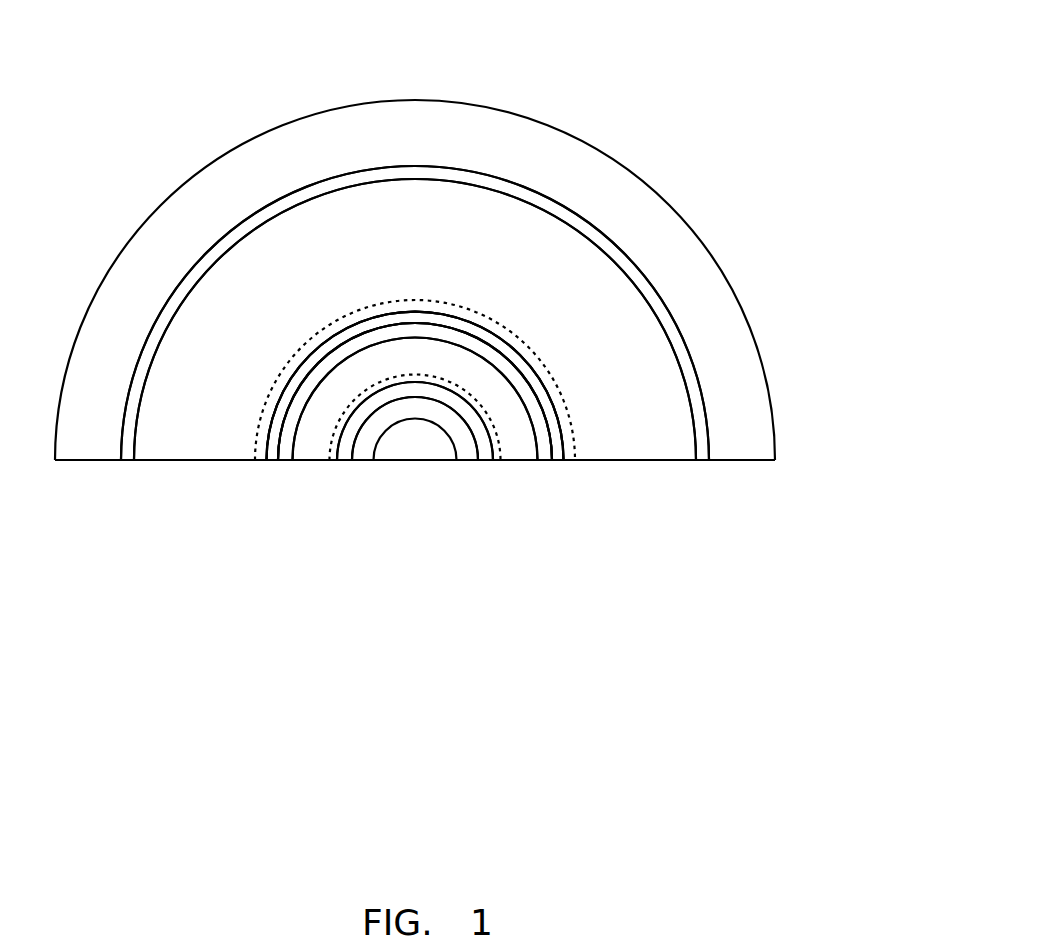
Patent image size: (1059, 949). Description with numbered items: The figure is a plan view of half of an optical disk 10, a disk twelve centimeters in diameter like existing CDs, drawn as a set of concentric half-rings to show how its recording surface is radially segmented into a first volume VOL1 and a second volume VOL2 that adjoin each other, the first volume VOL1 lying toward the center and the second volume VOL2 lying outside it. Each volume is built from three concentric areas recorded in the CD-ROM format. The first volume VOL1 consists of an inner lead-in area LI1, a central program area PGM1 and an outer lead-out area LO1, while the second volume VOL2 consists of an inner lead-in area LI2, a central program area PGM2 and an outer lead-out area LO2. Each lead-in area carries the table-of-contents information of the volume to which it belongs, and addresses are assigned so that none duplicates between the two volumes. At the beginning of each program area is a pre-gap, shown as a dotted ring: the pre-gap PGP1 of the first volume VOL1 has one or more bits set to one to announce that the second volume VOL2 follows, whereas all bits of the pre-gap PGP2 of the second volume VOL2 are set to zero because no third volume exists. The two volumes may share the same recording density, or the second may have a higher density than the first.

The optical disk 10 is at (655, 153).
The pre-gap of the first volume PGP1 is at (462, 395).
The pre-gap of the second volume PGP2 is at (548, 383).
The lead-in area of the first volume LI1 is at (482, 461).
The lead-out area of the first volume LO1 is at (547, 461).
The program area of the first volume PGM1 is at (542, 464).
The lead-in area of the second volume LI2 is at (562, 461).
The program area of the second volume PGM2 is at (697, 464).
The lead-out area of the second volume LO2 is at (707, 461).
The first volume VOL1 is at (355, 465).
The second volume VOL2 is at (272, 464).